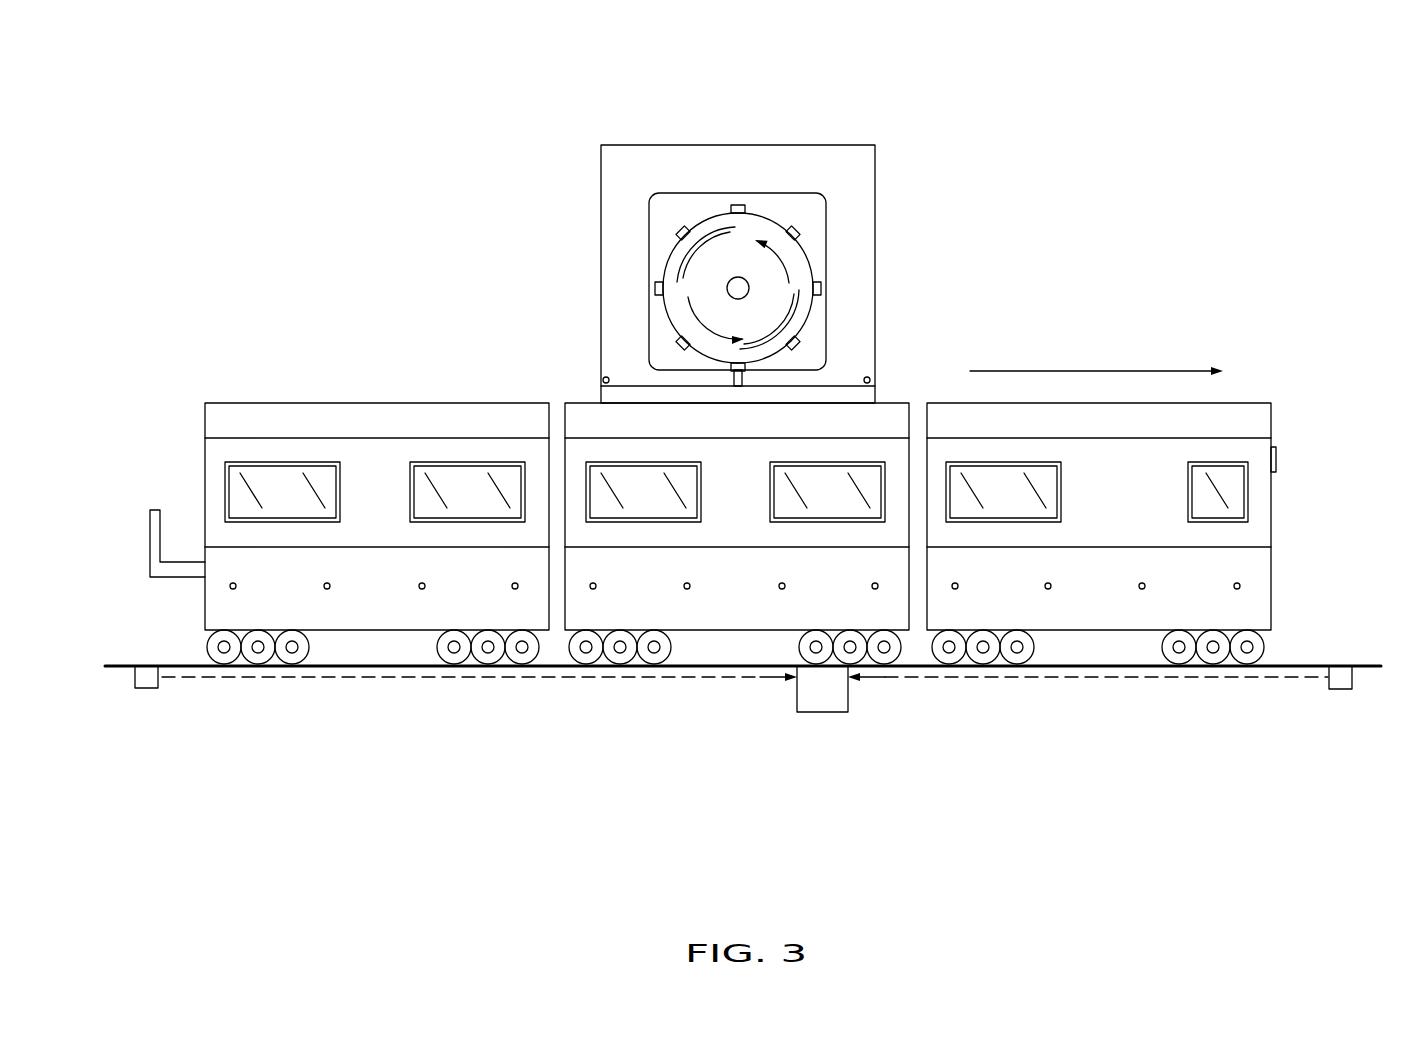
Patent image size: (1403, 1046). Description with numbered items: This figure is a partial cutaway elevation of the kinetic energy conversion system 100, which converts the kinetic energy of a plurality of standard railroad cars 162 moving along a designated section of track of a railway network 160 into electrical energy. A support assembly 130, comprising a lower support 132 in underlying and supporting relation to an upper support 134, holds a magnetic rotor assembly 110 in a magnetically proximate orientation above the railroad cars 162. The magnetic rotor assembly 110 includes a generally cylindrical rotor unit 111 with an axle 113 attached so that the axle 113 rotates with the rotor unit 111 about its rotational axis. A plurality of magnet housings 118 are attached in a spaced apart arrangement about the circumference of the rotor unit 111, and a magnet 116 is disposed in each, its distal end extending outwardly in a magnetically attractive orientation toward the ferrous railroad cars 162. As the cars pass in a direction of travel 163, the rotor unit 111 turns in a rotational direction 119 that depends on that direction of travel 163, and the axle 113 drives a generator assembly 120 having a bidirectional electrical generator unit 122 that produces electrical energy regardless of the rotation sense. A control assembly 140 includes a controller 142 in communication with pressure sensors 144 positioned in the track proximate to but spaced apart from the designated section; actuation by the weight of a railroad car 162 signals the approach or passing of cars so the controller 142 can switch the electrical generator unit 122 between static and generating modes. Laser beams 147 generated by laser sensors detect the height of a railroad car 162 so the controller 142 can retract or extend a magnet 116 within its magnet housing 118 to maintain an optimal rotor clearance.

The kinetic energy conversion system 100 is at (598, 75).
The magnetic rotor assembly 110 is at (662, 248).
The rotor unit 111 is at (712, 215).
The axle 113 is at (727, 290).
The magnet 116 is at (745, 380).
The magnet housing 118 is at (677, 228).
The rotational direction 119 is at (783, 262).
The generator assembly 120 is at (735, 185).
The electrical generator unit 122 is at (802, 193).
The support assembly 130 is at (922, 227).
The lower support 132 is at (875, 395).
The upper support 134 is at (875, 262).
The control assembly 140 is at (842, 745).
The controller 142 is at (797, 700).
The pressure sensor 144 is at (147, 688).
The laser beam 147 is at (605, 376).
The railway network 160 is at (1297, 372).
The railroad car 162 is at (408, 422).
The direction of travel 163 is at (1140, 371).